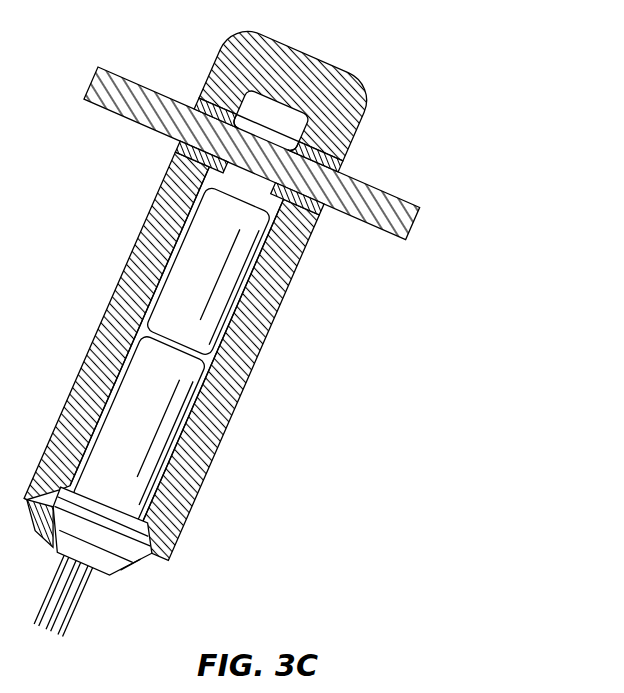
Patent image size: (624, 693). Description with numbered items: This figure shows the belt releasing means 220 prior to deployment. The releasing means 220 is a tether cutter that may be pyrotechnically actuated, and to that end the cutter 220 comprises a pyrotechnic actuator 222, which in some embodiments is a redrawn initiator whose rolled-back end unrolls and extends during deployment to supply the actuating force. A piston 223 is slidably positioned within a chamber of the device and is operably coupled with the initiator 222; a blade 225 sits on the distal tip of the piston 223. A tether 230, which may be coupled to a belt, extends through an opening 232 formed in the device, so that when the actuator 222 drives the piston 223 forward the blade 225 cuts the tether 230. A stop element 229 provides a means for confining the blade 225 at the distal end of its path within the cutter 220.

The releasing means 220 is at (437, 96).
The pyrotechnic actuator 222 is at (111, 511).
The piston 223 is at (229, 288).
The blade 225 is at (272, 150).
The stop element 229 is at (247, 200).
The tether 230 is at (410, 226).
The opening 232 is at (341, 147).